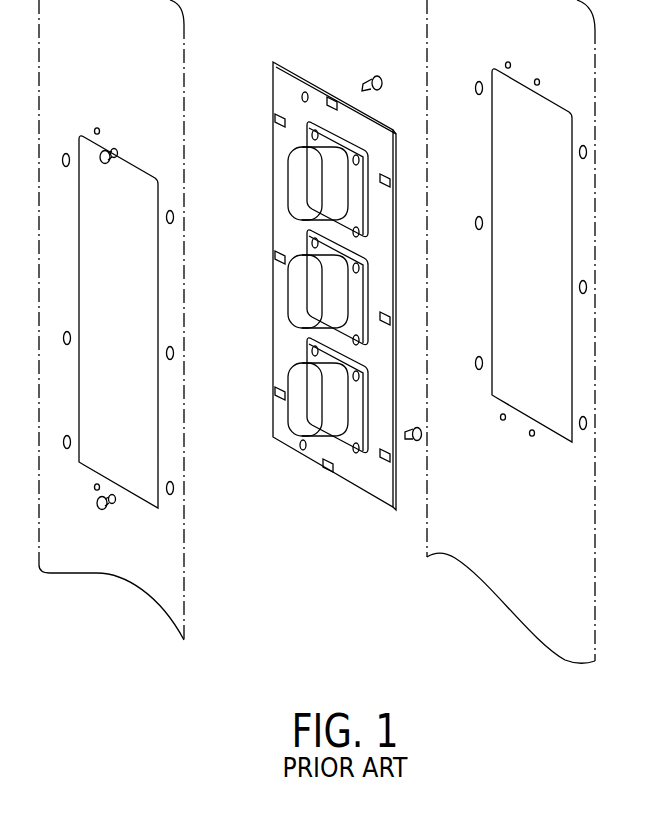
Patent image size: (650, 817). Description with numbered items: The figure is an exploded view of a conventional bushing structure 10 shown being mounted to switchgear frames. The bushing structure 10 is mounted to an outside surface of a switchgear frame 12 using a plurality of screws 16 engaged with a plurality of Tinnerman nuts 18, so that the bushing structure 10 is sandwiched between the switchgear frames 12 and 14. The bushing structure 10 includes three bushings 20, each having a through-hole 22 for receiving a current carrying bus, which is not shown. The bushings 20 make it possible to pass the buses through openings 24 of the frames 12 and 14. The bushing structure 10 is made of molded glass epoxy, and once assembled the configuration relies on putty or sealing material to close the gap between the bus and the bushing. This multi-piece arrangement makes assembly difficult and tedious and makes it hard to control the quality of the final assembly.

The bushing structure 10 is at (373, 500).
The switchgear frame 12 is at (176, 548).
The switchgear frame 14 is at (585, 549).
The screws 16 is at (378, 74).
The Tinnerman nuts 18 is at (67, 152).
The bushings 20 is at (337, 183).
The through-hole 22 is at (303, 172).
The openings 24 is at (573, 381).